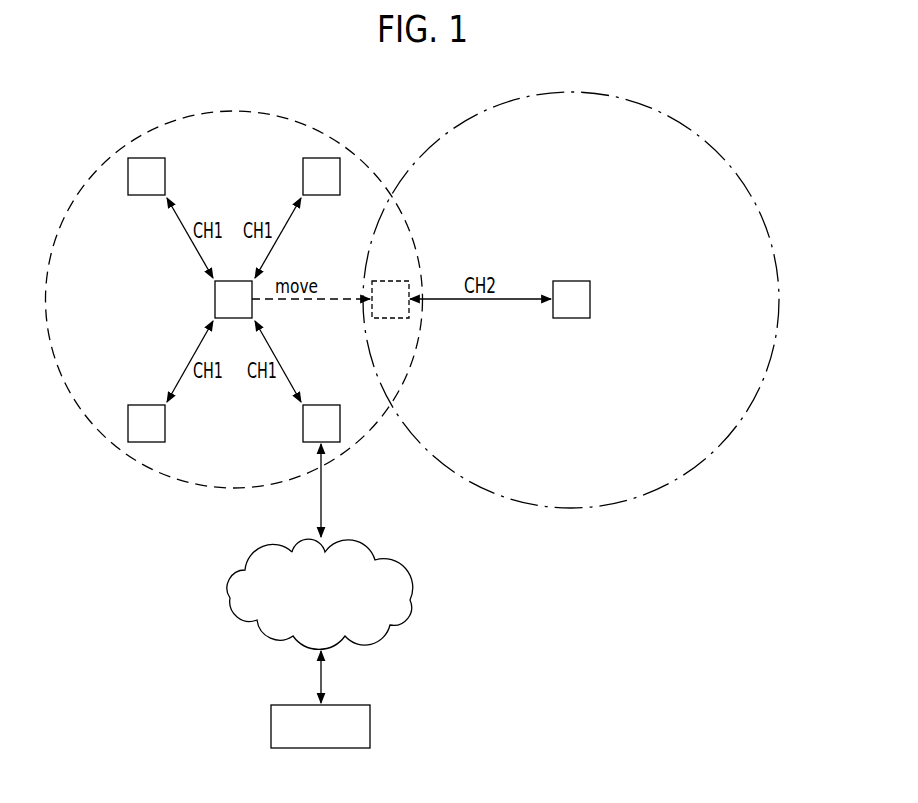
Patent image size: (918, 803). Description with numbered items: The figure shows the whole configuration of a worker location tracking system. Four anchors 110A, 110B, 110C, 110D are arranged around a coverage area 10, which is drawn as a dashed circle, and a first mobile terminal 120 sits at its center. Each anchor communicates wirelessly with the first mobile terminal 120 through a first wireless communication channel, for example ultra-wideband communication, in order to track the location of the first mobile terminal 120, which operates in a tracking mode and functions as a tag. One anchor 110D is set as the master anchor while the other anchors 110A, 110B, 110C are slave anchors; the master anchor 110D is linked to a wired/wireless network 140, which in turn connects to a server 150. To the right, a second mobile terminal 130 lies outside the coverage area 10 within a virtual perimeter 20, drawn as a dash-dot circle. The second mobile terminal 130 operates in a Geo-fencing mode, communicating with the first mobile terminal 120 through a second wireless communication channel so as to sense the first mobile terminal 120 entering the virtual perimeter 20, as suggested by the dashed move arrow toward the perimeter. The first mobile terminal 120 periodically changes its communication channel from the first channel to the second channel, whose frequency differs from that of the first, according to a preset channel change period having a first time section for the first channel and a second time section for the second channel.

The coverage area 10 is at (320, 130).
The virtual perimeter 20 is at (777, 252).
The anchor 110A is at (128, 176).
The anchor 110B is at (303, 176).
The anchor 110C is at (165, 423).
The master anchor 110D is at (303, 423).
The first mobile terminal 120 is at (215, 299).
The second mobile terminal 130 is at (590, 299).
The wired/wireless network 140 is at (413, 578).
The server 150 is at (370, 725).